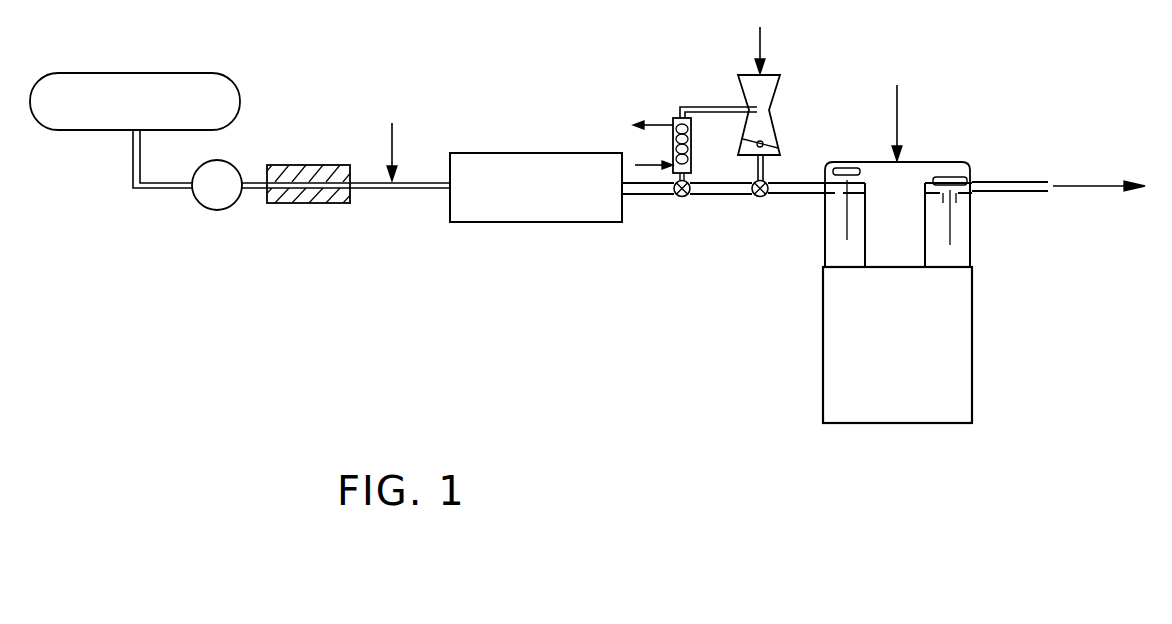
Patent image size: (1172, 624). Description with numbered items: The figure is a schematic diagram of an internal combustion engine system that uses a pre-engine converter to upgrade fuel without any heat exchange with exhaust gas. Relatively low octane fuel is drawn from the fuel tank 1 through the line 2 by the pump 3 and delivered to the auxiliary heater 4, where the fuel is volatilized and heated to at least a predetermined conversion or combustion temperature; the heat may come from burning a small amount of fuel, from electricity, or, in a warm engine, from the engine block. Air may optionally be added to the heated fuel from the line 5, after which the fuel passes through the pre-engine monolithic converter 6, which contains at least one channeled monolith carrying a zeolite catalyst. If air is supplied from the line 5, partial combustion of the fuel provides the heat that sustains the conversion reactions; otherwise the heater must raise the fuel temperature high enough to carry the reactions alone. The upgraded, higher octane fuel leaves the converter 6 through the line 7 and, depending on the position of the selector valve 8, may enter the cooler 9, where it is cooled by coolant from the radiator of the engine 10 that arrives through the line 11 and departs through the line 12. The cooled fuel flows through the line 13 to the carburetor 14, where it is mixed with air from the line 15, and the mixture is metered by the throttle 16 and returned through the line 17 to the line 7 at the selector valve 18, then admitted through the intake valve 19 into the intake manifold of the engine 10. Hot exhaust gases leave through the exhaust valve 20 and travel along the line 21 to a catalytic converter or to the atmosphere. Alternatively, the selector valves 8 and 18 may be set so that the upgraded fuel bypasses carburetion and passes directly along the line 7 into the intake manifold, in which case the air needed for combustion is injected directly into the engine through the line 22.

The fuel tank 1 is at (176, 73).
The line 2 is at (163, 190).
The pump 3 is at (218, 210).
The auxiliary heater 4 is at (312, 164).
The line 5 is at (394, 153).
The pre-engine monolithic converter 6 is at (552, 153).
The line 7 is at (645, 196).
The selector valve 8 is at (686, 197).
The cooler 9 is at (693, 152).
The engine 10 is at (973, 390).
The line 11 is at (658, 163).
The line 12 is at (657, 123).
The line 13 is at (705, 107).
The carburetor 14 is at (778, 92).
The line 15 is at (765, 48).
The throttle 16 is at (763, 142).
The line 17 is at (766, 166).
The selector valve 18 is at (765, 197).
The intake valve 19 is at (848, 163).
The exhaust valve 20 is at (953, 172).
The line 21 is at (1020, 179).
The line 22 is at (900, 125).